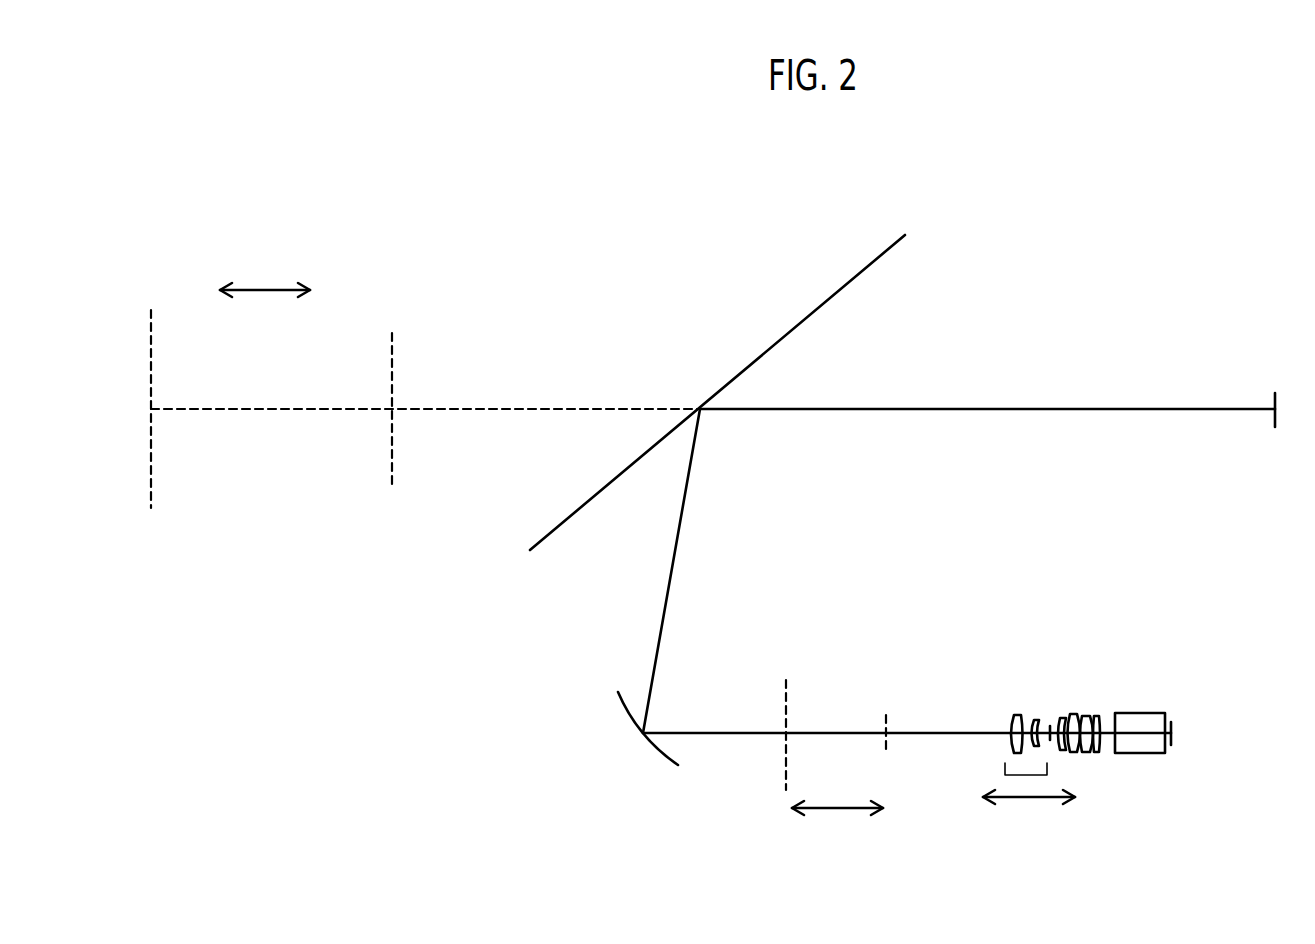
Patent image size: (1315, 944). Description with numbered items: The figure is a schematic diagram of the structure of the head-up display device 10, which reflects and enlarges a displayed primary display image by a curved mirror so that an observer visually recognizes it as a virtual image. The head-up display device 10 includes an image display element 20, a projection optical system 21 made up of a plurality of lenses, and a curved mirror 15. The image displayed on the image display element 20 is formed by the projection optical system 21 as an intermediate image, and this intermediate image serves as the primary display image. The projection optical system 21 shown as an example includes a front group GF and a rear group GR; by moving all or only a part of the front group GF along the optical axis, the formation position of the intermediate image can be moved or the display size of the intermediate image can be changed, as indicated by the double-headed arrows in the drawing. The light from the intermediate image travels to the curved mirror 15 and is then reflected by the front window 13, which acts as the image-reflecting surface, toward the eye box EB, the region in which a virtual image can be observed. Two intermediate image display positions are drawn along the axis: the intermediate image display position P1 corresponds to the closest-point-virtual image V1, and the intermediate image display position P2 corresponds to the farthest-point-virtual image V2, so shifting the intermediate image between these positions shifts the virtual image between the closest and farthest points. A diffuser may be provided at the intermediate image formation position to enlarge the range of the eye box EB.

The head-up display device 10 is at (935, 570).
The front window 13 is at (862, 270).
The curved mirror 15 is at (658, 753).
The image display element 20 is at (1173, 725).
The projection optical system 21 is at (1085, 700).
The front group GF is at (1043, 704).
The rear group GR is at (1165, 704).
The closest-point-virtual image V1 is at (393, 345).
The farthest-point-virtual image V2 is at (152, 322).
The intermediate image display position P1 is at (788, 683).
The intermediate image display position P2 is at (888, 718).
The eye box EB is at (1276, 395).